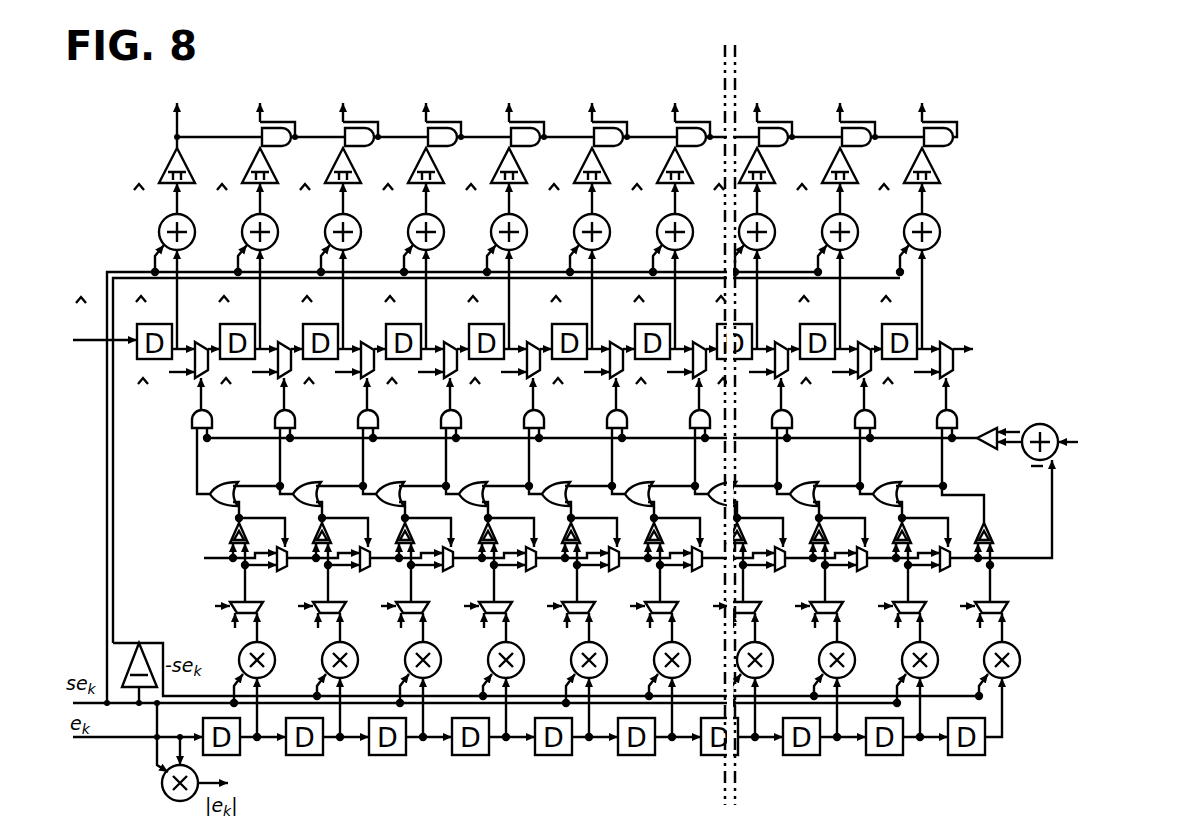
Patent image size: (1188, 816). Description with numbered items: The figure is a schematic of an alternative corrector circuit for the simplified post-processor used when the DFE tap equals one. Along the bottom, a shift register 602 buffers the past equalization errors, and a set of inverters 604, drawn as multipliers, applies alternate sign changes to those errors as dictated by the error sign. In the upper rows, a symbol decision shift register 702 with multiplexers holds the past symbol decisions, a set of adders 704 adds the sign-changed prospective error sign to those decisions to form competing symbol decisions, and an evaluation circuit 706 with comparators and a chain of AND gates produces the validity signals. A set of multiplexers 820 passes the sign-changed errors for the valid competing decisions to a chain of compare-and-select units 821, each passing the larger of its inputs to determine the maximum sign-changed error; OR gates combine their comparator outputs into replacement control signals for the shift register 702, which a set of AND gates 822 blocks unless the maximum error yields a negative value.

The evaluation circuit 706 is at (988, 118).
The set of adders 704 is at (988, 203).
The symbol decision shift register 702 is at (988, 288).
The set of AND gates 822 is at (1113, 398).
The chain of compare-and-select units 821 is at (1055, 485).
The set of multiplexers 820 is at (1015, 582).
The set of inverters 604 is at (1015, 642).
The shift register 602 is at (1015, 712).